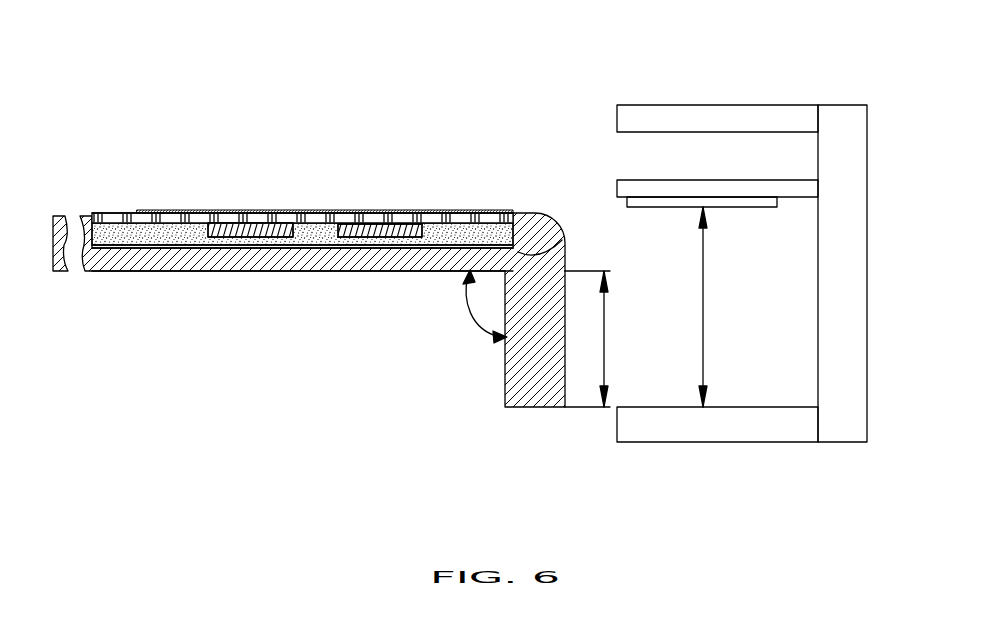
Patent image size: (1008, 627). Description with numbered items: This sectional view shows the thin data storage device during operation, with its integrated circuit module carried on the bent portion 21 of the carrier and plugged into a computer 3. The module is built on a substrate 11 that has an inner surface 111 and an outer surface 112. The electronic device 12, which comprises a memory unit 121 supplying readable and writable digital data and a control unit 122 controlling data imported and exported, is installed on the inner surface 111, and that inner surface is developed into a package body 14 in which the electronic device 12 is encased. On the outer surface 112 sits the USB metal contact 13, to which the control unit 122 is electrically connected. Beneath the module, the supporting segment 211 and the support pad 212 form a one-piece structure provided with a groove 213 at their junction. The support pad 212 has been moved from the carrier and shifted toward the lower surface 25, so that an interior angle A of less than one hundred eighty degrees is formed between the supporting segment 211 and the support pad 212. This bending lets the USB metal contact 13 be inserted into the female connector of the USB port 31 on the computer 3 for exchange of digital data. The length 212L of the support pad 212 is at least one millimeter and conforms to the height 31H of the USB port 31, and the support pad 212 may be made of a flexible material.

The frame body 21 is at (87, 162).
The supporting segment 211 is at (240, 272).
The support pad 212 is at (520, 362).
The groove 213 is at (562, 240).
The substrate 11 is at (410, 217).
The inner surface 111 is at (493, 223).
The outer surface 112 is at (451, 215).
The electronic device 12 is at (360, 162).
The memory unit 121 is at (278, 228).
The control unit 122 is at (348, 225).
The USB metal contact 13 is at (238, 212).
The package body 14 is at (183, 211).
The lower surface 25 is at (332, 272).
The interior angle A is at (479, 306).
The length 212L is at (608, 339).
The computer 3 is at (532, 100).
The USB port 31 is at (574, 149).
The height 31H is at (720, 307).